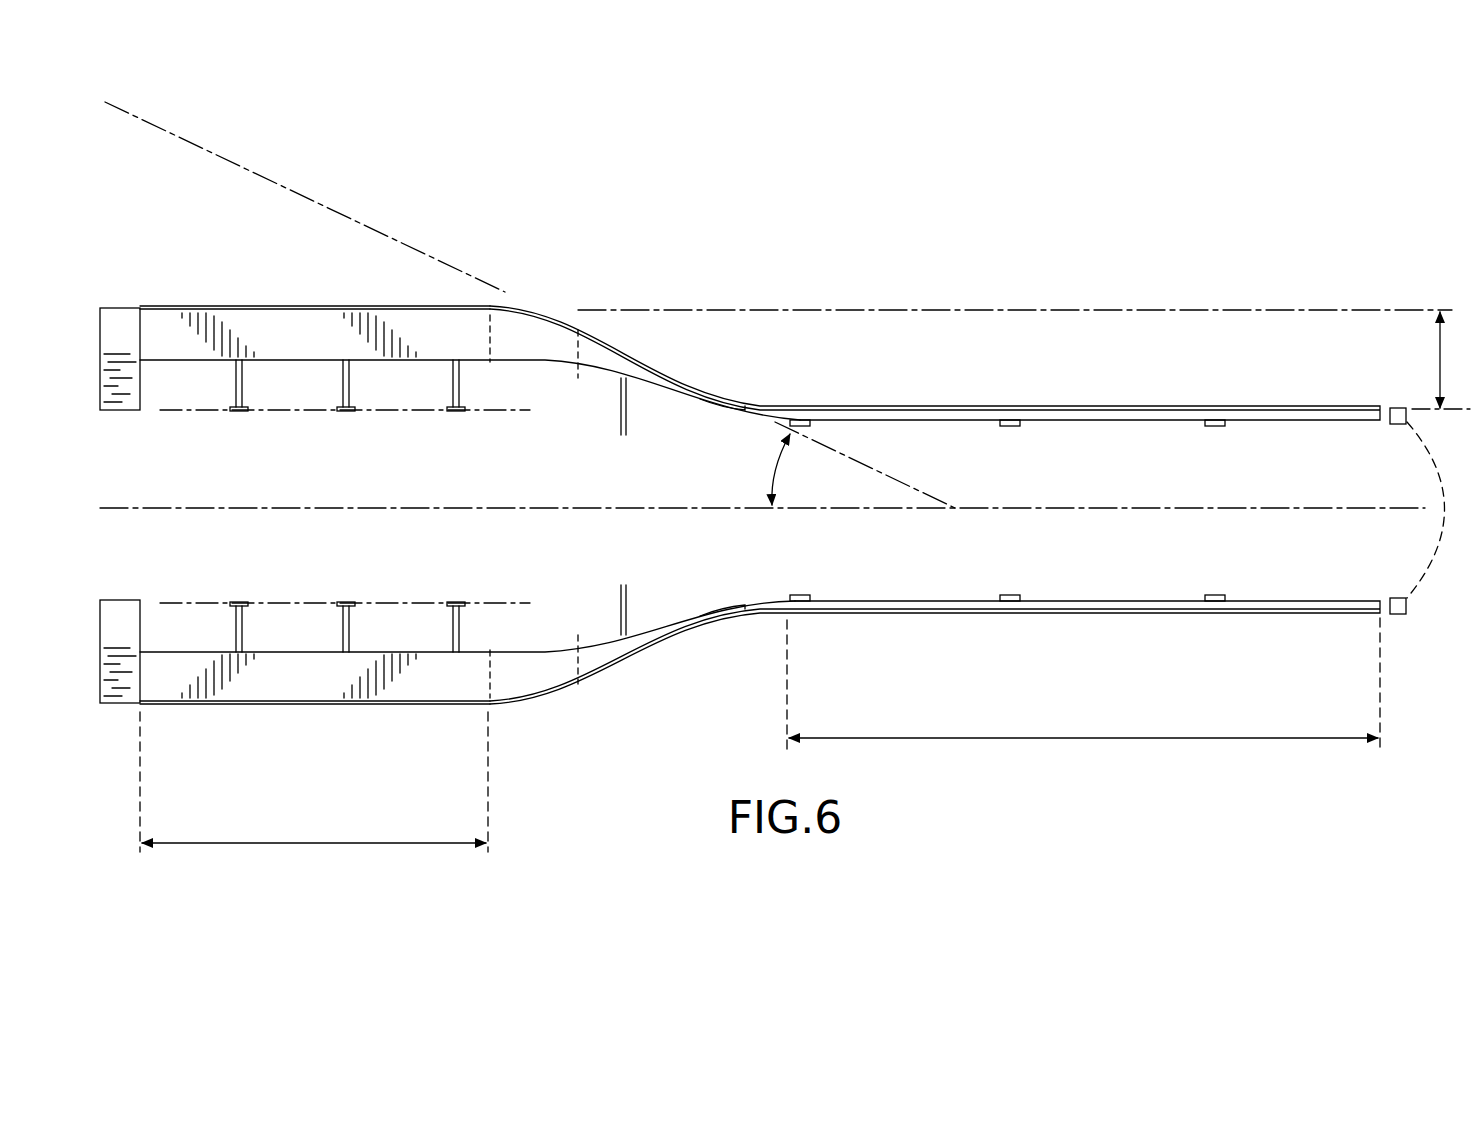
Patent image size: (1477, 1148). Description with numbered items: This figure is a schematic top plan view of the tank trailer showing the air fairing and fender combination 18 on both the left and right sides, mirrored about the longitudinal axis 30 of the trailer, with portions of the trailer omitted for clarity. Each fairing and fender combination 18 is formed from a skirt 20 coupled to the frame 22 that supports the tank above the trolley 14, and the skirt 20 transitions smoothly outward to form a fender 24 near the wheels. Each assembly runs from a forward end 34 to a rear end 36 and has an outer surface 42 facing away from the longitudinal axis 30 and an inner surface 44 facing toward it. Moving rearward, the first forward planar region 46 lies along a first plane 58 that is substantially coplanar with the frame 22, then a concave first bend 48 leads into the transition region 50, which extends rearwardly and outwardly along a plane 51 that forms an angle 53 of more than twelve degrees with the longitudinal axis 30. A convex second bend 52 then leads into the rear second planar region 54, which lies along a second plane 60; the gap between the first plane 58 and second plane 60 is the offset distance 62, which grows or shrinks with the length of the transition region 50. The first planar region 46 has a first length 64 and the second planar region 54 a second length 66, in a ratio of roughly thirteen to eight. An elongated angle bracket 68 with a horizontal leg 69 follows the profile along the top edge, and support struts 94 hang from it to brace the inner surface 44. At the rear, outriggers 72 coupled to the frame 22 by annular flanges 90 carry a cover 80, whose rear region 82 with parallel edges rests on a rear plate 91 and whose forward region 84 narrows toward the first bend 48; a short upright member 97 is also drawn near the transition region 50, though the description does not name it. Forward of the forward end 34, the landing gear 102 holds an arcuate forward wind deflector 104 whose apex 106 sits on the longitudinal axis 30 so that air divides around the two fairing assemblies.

The air fairing and fender combination 18 is at (977, 242).
The skirt 20 is at (1135, 403).
The trolley 14 is at (495, 403).
The frame 22 is at (356, 509).
The fender 24 is at (210, 304).
The longitudinal axis 30 is at (1050, 506).
The forward end 34 is at (1384, 430).
The rear end 36 is at (158, 304).
The outer surface 42 is at (1185, 405).
The inner surface 44 is at (1268, 421).
The first forward planar region 46 is at (1085, 403).
The first bend 48 is at (728, 395).
The transition region 50 is at (648, 357).
The plane 51 is at (222, 156).
The second bend 52 is at (546, 304).
The angle 53 is at (775, 466).
The rear second planar region 54 is at (282, 304).
The first plane 58 is at (1423, 407).
The second plane 60 is at (1331, 308).
The offset distance 62 is at (1440, 361).
The first length 64 is at (1040, 736).
The second length 66 is at (318, 845).
The angle bracket 68 is at (373, 305).
The leg 69 is at (1165, 420).
The outrigger 72 is at (235, 383).
The cover 80 is at (330, 318).
The rear region 82 is at (245, 340).
The forward region 84 is at (553, 366).
The annular flange 90 is at (240, 413).
The rear plate 91 is at (125, 305).
The support struts 94 is at (798, 418).
The post 97 is at (630, 424).
The landing gear 102 is at (1398, 615).
The forward wind deflector 104 is at (1442, 560).
The apex 106 is at (1455, 512).